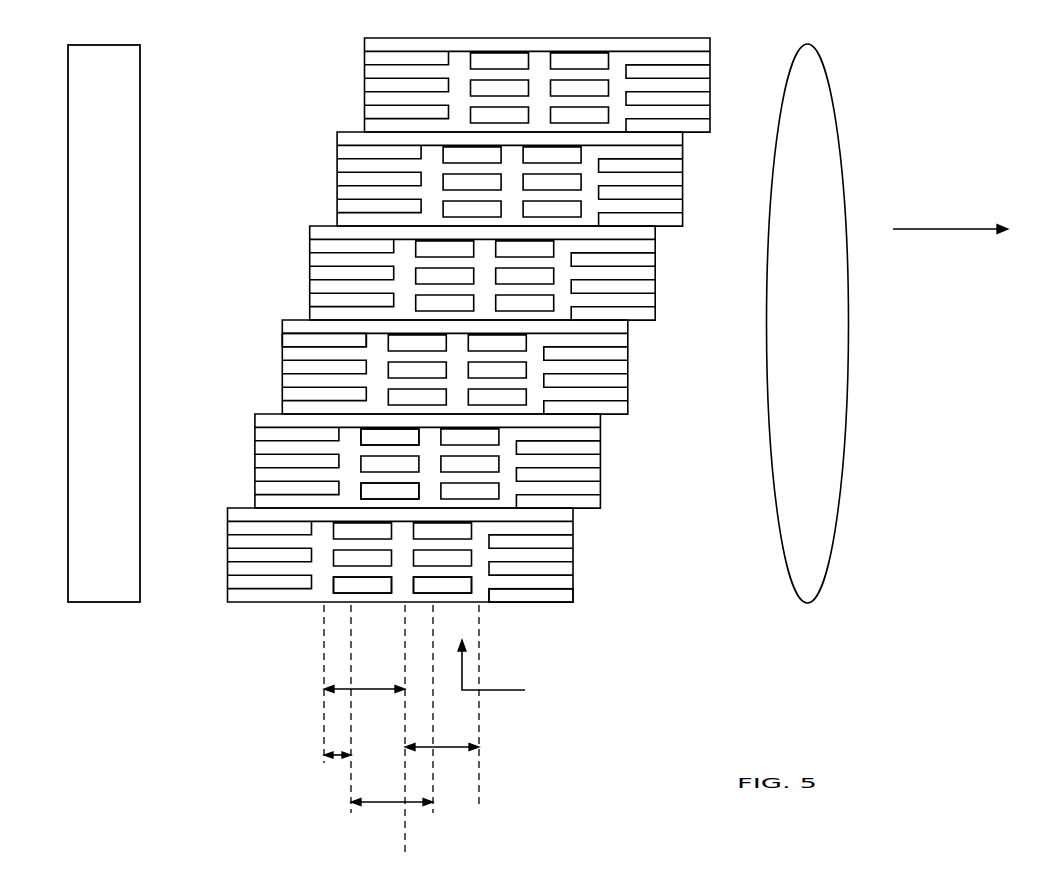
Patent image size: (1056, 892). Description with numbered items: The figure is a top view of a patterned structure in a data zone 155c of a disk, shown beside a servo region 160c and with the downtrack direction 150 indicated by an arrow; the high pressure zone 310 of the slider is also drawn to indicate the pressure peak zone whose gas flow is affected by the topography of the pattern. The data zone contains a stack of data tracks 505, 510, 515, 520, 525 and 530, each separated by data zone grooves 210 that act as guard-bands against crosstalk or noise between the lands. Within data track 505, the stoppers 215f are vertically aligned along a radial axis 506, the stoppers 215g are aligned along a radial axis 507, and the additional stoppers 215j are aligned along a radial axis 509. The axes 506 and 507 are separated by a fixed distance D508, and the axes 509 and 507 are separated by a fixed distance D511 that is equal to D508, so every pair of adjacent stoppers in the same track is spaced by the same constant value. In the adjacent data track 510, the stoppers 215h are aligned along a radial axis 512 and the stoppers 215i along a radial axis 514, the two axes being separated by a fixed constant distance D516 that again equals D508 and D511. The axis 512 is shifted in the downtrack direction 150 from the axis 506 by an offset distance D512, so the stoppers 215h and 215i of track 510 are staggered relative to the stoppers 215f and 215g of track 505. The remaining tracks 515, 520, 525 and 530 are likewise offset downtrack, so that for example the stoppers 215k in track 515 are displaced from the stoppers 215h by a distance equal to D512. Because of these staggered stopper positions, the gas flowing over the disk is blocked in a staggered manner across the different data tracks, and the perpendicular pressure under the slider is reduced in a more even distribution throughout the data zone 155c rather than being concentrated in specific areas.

The servo region 160c is at (123, 150).
The high pressure zone 310 is at (825, 232).
The downtrack direction 150 is at (927, 229).
The data track 530 is at (710, 72).
The data track 525 is at (682, 167).
The data track 520 is at (654, 258).
The data track 515 is at (627, 378).
The data track 510 is at (600, 475).
The data track 505 is at (573, 540).
The data zone groove 210 is at (562, 584).
The stoppers 215k is at (378, 342).
The stoppers 215h is at (350, 433).
The stoppers 215i is at (428, 487).
The stoppers 215f is at (322, 591).
The stoppers 215g is at (404, 591).
The stoppers 215j is at (480, 591).
The radial axis 506 is at (324, 664).
The radial axis 512 is at (352, 638).
The radial axis 507 is at (407, 825).
The radial axis 514 is at (433, 767).
The radial axis 509 is at (480, 720).
The fixed distance D508 is at (348, 693).
The offset distance D512 is at (337, 753).
The fixed distance D511 is at (450, 749).
The fixed constant distance D516 is at (387, 800).
The data zone 155c is at (509, 670).